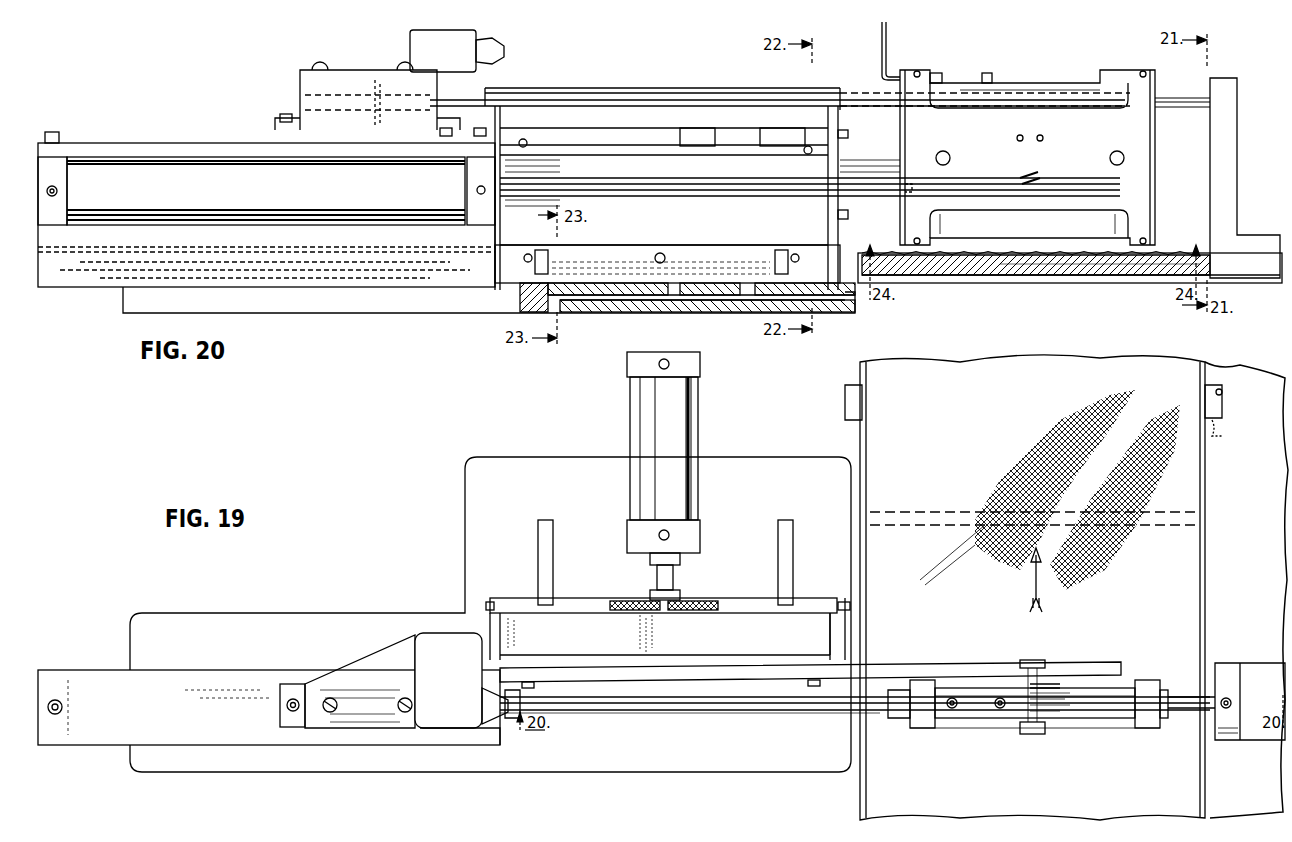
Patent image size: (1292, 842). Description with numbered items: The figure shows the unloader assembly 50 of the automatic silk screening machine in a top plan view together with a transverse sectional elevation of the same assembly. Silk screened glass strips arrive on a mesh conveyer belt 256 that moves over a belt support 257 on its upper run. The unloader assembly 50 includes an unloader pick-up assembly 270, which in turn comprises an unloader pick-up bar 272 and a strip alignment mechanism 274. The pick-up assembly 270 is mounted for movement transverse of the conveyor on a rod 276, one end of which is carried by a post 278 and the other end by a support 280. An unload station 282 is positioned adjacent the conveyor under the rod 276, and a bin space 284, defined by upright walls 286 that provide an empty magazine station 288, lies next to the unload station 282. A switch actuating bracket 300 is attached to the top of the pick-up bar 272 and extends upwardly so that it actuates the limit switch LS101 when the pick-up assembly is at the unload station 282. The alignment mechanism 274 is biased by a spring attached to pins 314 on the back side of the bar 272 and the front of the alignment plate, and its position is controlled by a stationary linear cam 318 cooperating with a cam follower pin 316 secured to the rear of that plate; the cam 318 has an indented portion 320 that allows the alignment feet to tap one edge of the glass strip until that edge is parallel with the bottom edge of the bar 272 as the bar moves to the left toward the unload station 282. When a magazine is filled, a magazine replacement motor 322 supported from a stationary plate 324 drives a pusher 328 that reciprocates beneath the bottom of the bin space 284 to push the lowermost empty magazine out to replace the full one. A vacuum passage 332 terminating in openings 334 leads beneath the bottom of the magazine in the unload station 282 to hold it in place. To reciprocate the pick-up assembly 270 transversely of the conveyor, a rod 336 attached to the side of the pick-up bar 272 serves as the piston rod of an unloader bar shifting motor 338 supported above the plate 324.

In FIG. 19, the unloader assembly 50 is at (808, 447).
In FIG. 20, the mesh conveyer belt 256 is at (978, 258).
In FIG. 19, the mesh conveyer belt 256 is at (1110, 798).
In FIG. 20, the belt support 257 is at (1018, 268).
In FIG. 20, the unloader pick-up assembly 270 is at (997, 139).
In FIG. 20, the unloader pick-up bar 272 is at (1060, 236).
In FIG. 19, the unloader pick-up bar 272 is at (1110, 709).
In FIG. 20, the strip alignment mechanism 274 is at (1100, 193).
In FIG. 19, the strip alignment mechanism 274 is at (1092, 738).
In FIG. 20, the rod 276 is at (1172, 98).
In FIG. 19, the rod 276 is at (1190, 695).
In FIG. 20, the post 278 is at (1238, 188).
In FIG. 19, the post 278 is at (1252, 642).
In FIG. 20, the support 280 is at (414, 131).
In FIG. 19, the unload station 282 is at (634, 716).
In FIG. 19, the bin space 284 is at (716, 659).
In FIG. 19, the upright walls 286 is at (816, 655).
In FIG. 19, the empty magazine station 288 is at (600, 640).
In FIG. 20, the switch actuating bracket 300 is at (888, 52).
In FIG. 19, the pins 314 is at (1042, 660).
In FIG. 19, the cam follower pin 316 is at (1045, 685).
In FIG. 19, the stationary linear cam 318 is at (898, 666).
In FIG. 19, the indented portion 320 is at (762, 700).
In FIG. 19, the magazine replacement motor 322 is at (695, 440).
In FIG. 19, the stationary plate 324 is at (516, 515).
In FIG. 20, the pusher 328 is at (728, 265).
In FIG. 20, the vacuum passage 332 is at (556, 312).
In FIG. 20, the openings 334 is at (590, 290).
In FIG. 20, the rod 336 is at (765, 195).
In FIG. 20, the unloader bar shifting motor 338 is at (350, 191).
In FIG. 19, the unloader bar shifting motor 338 is at (226, 728).
In FIG. 20, the limit switch LS101 is at (462, 42).